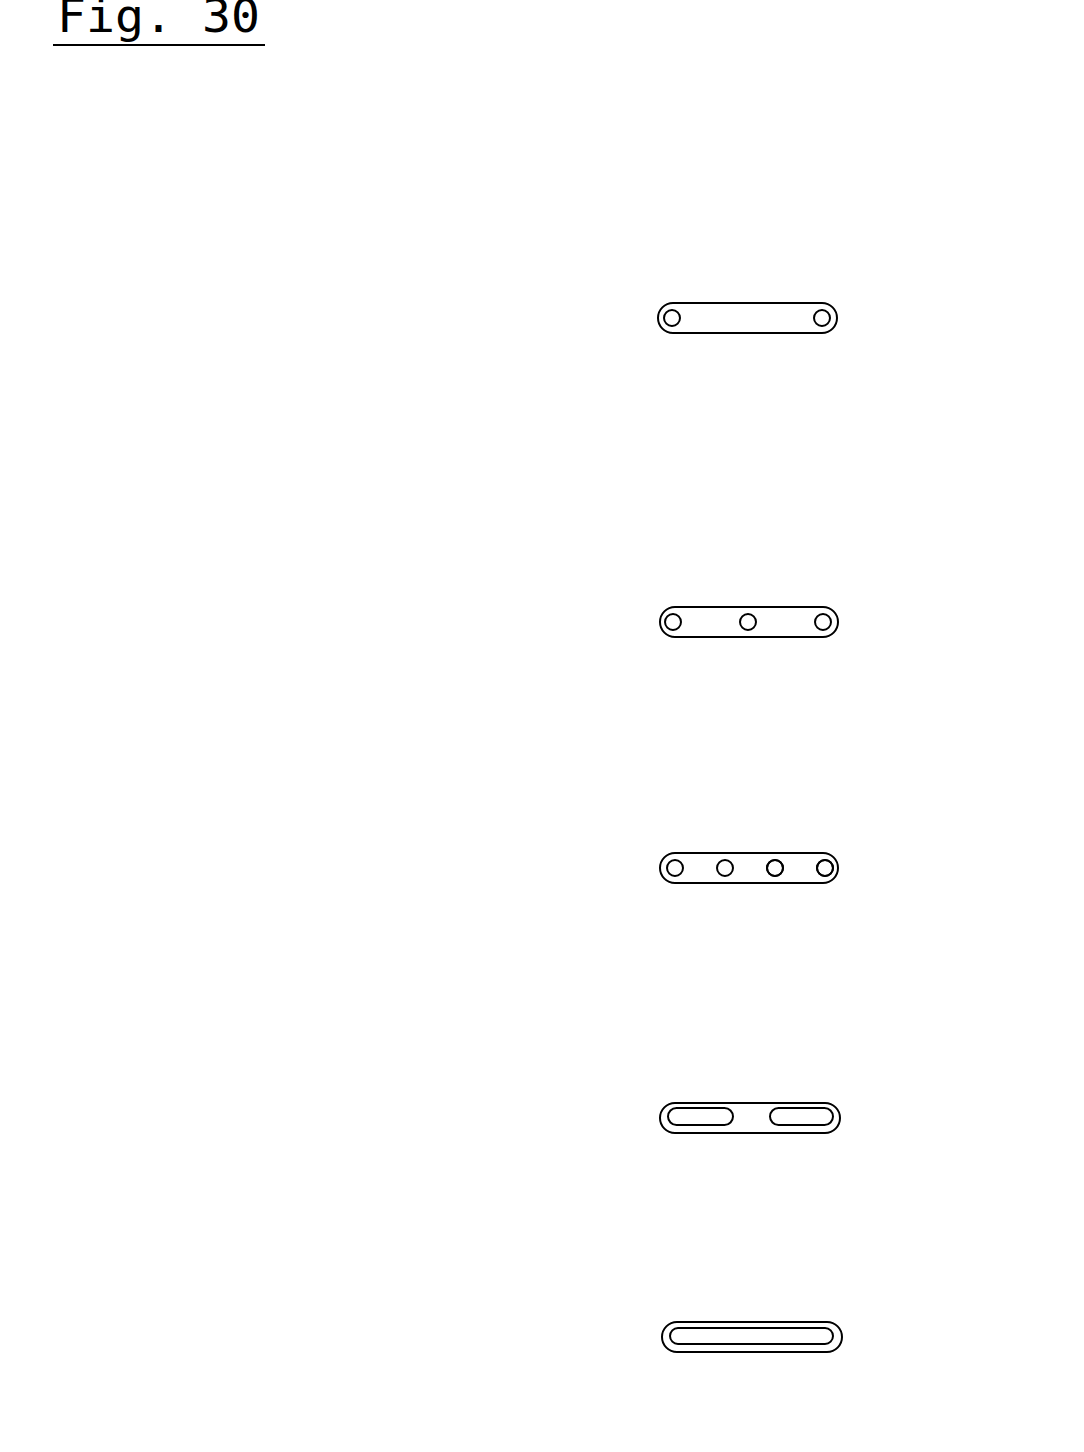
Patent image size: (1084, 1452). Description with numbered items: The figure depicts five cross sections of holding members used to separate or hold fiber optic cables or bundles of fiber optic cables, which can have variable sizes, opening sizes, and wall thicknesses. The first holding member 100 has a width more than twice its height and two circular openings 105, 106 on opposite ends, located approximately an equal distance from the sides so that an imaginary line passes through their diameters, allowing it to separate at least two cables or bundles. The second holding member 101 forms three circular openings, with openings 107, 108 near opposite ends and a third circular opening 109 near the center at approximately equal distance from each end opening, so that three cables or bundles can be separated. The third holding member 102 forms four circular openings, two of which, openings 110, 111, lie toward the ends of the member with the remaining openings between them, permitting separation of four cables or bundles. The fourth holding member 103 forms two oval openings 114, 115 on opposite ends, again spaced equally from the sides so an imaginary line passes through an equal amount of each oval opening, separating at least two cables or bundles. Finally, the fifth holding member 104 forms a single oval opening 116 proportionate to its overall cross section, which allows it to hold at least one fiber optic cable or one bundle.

The holding member 100 is at (728, 261).
The holding member 101 is at (749, 541).
The holding member 102 is at (697, 787).
The holding member 103 is at (733, 1055).
The holding member 104 is at (734, 1276).
The circular opening 105 is at (761, 238).
The circular opening 106 is at (617, 283).
The circular opening 107 is at (756, 515).
The circular opening 108 is at (618, 586).
The circular opening 109 is at (690, 558).
The circular opening 110 is at (878, 831).
The circular opening 111 is at (835, 803).
The oval opening 114 is at (855, 1081).
The oval opening 115 is at (647, 1081).
The oval opening 116 is at (697, 1301).